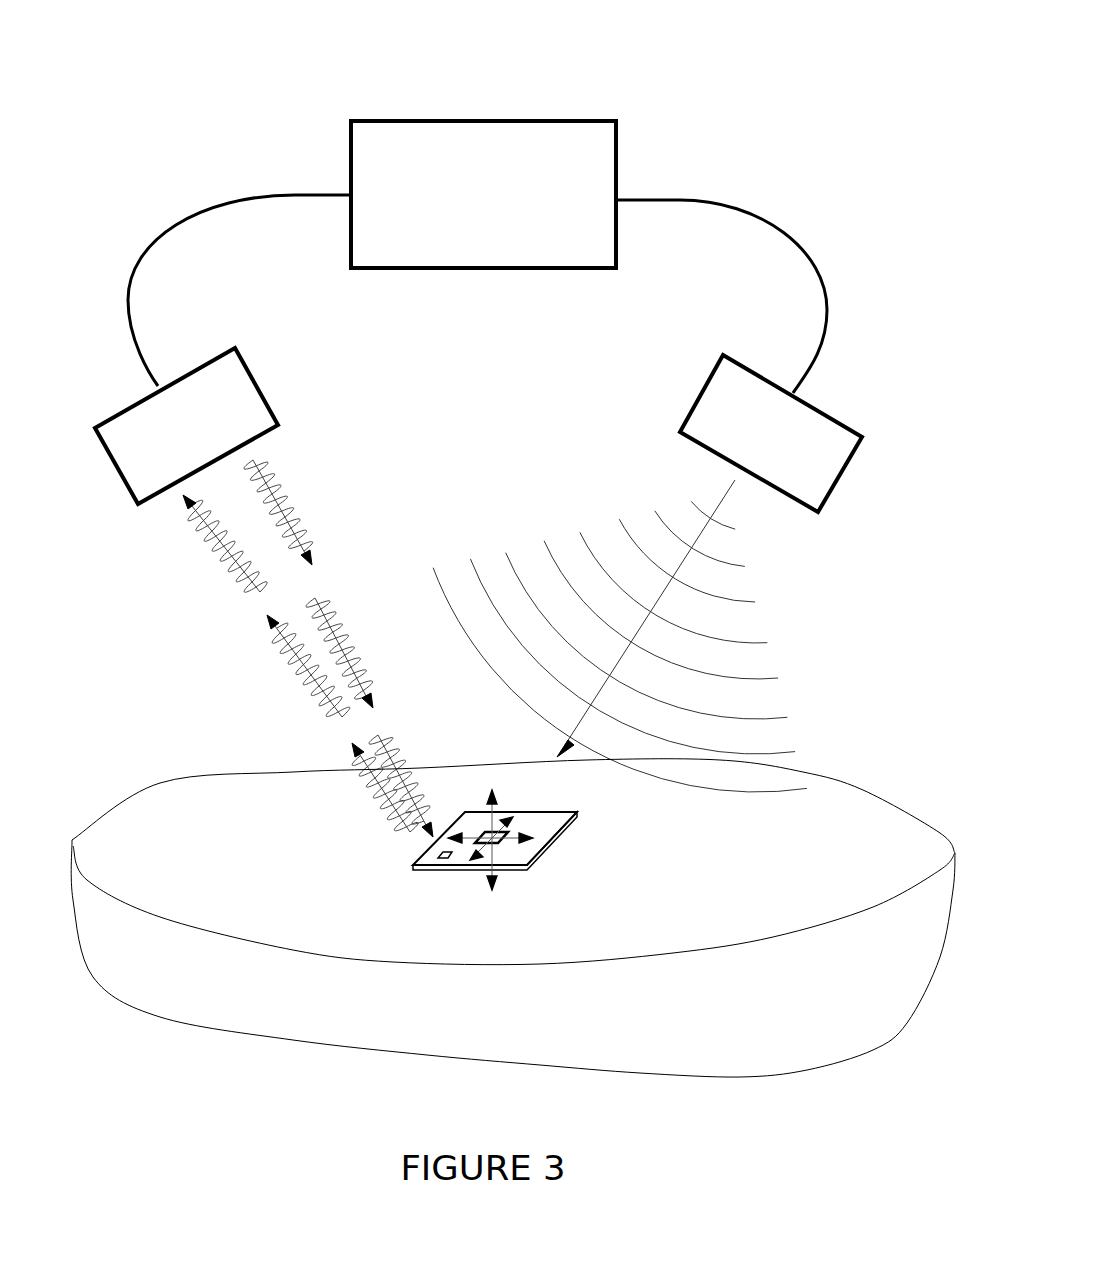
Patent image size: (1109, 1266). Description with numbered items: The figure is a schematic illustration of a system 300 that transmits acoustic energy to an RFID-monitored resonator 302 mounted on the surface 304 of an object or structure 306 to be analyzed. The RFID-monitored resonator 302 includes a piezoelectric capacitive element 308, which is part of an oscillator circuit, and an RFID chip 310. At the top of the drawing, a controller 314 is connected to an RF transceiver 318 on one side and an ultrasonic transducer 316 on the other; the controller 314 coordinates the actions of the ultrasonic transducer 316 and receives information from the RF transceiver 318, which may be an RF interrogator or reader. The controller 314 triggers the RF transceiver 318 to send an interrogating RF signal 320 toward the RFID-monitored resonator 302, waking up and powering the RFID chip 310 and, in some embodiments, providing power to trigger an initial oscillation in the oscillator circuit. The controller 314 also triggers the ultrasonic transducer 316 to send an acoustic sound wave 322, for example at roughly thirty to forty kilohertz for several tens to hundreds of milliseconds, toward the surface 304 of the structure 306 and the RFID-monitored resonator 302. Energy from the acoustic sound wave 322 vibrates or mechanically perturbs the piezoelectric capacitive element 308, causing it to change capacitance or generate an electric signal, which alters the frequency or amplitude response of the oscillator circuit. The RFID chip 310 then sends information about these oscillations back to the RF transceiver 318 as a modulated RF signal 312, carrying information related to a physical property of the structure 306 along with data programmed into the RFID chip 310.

The system 300 is at (504, 35).
The RFID-monitored resonator 302 is at (531, 860).
The surface 304 is at (822, 832).
The object or structure 306 is at (729, 1003).
The piezoelectric capacitive element 308 is at (534, 816).
The RFID chip 310 is at (438, 867).
The modulated RF signal 312 is at (254, 655).
The controller 314 is at (477, 257).
The ultrasonic transducer 316 is at (771, 433).
The RF transceiver 318 is at (186, 426).
The interrogating RF signal 320 is at (362, 611).
The acoustic sound wave 322 is at (768, 618).